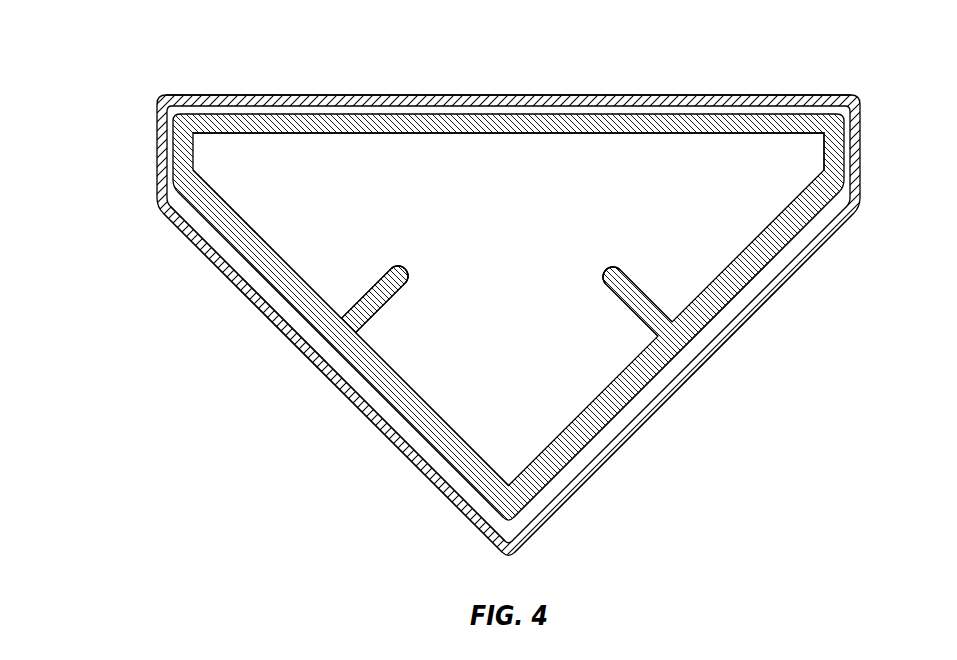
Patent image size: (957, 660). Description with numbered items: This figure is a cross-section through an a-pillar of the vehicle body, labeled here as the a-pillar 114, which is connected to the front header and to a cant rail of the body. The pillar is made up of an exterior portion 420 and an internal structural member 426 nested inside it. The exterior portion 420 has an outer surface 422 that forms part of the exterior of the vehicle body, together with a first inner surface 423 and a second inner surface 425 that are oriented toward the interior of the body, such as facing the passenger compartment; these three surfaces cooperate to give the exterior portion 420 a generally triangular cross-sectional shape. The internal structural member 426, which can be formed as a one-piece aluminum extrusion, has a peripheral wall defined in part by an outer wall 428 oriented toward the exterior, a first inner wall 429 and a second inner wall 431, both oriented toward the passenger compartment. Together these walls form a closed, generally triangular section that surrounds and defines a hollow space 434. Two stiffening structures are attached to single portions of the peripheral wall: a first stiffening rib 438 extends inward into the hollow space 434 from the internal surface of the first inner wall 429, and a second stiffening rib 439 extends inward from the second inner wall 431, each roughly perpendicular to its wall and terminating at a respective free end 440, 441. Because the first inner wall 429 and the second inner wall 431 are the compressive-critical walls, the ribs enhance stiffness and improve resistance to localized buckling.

The right-side a-pillar 114 is at (140, 69).
The exterior portion 420 is at (157, 174).
The outer surface 422 is at (465, 95).
The first inner surface 423 is at (259, 309).
The second inner surface 425 is at (758, 312).
The internal structural member 426 is at (444, 462).
The outer wall 428 is at (250, 134).
The first inner wall 429 is at (261, 238).
The second inner wall 431 is at (754, 240).
The hollow space 434 is at (530, 213).
The first stiffening rib 438 is at (388, 300).
The second stiffening rib 439 is at (630, 308).
The free end 440 is at (401, 272).
The free end 441 is at (613, 272).